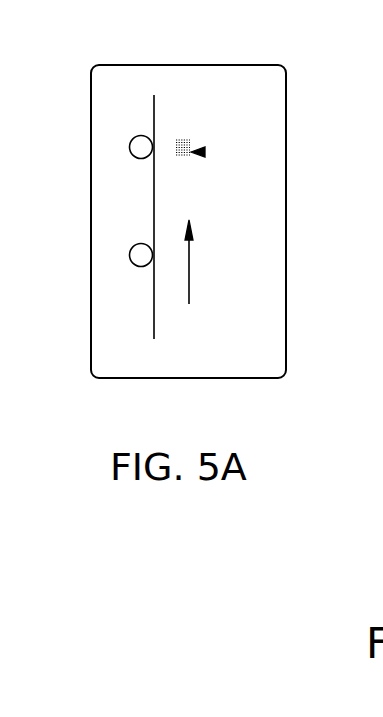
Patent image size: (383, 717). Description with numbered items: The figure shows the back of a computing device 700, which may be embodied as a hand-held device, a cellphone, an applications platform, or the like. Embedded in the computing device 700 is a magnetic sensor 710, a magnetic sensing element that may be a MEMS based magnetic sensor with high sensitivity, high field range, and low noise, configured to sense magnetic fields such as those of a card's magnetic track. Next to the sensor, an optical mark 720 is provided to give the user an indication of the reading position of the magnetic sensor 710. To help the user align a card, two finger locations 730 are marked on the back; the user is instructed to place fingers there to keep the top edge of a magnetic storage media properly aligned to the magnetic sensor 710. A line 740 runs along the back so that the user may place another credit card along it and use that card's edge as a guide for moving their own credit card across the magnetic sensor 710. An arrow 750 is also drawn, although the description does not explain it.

The computing device 700 is at (286, 82).
The magnetic sensor 710 is at (205, 152).
The optical mark 720 is at (195, 142).
The locations 730 is at (129, 253).
The line 740 is at (153, 300).
The direction arrow 750 is at (195, 276).